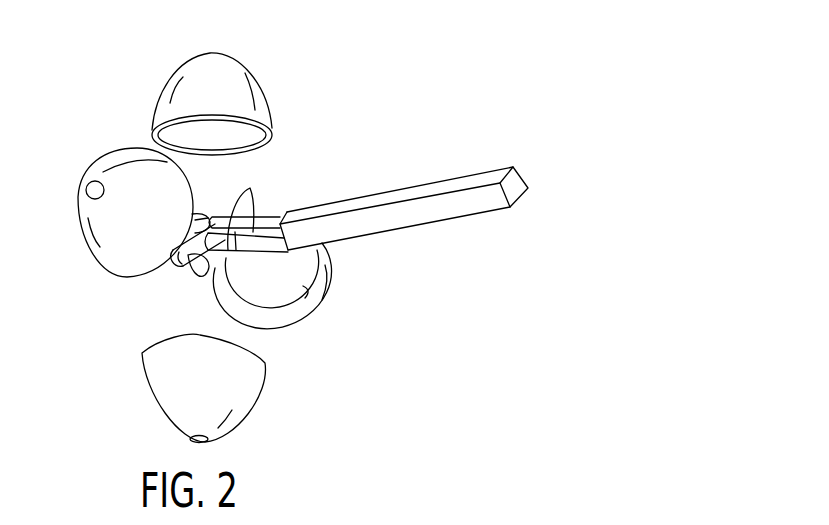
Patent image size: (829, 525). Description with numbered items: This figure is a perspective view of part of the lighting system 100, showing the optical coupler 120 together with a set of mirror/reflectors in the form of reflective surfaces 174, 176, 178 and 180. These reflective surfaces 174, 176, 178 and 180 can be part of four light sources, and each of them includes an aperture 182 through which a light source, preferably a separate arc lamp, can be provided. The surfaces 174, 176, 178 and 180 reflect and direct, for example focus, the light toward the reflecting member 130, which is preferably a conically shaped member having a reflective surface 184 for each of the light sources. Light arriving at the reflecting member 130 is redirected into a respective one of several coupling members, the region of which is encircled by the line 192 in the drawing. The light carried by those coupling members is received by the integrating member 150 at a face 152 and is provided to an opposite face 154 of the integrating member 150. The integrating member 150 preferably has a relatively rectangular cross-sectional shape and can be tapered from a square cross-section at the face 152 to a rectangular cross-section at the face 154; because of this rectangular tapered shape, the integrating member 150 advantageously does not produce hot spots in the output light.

The system 100 is at (408, 52).
The optical coupler 120 is at (443, 244).
The reflecting member 130 is at (176, 268).
The integrating member 150 is at (400, 186).
The face 152 is at (278, 213).
The face 154 is at (520, 184).
The reflective surface 174 is at (266, 100).
The reflective surface 176 is at (110, 250).
The reflective surface 178 is at (238, 403).
The reflective surface 180 is at (325, 301).
The aperture 182 is at (92, 192).
The reflective surface 184 is at (200, 215).
The line 192 is at (251, 232).